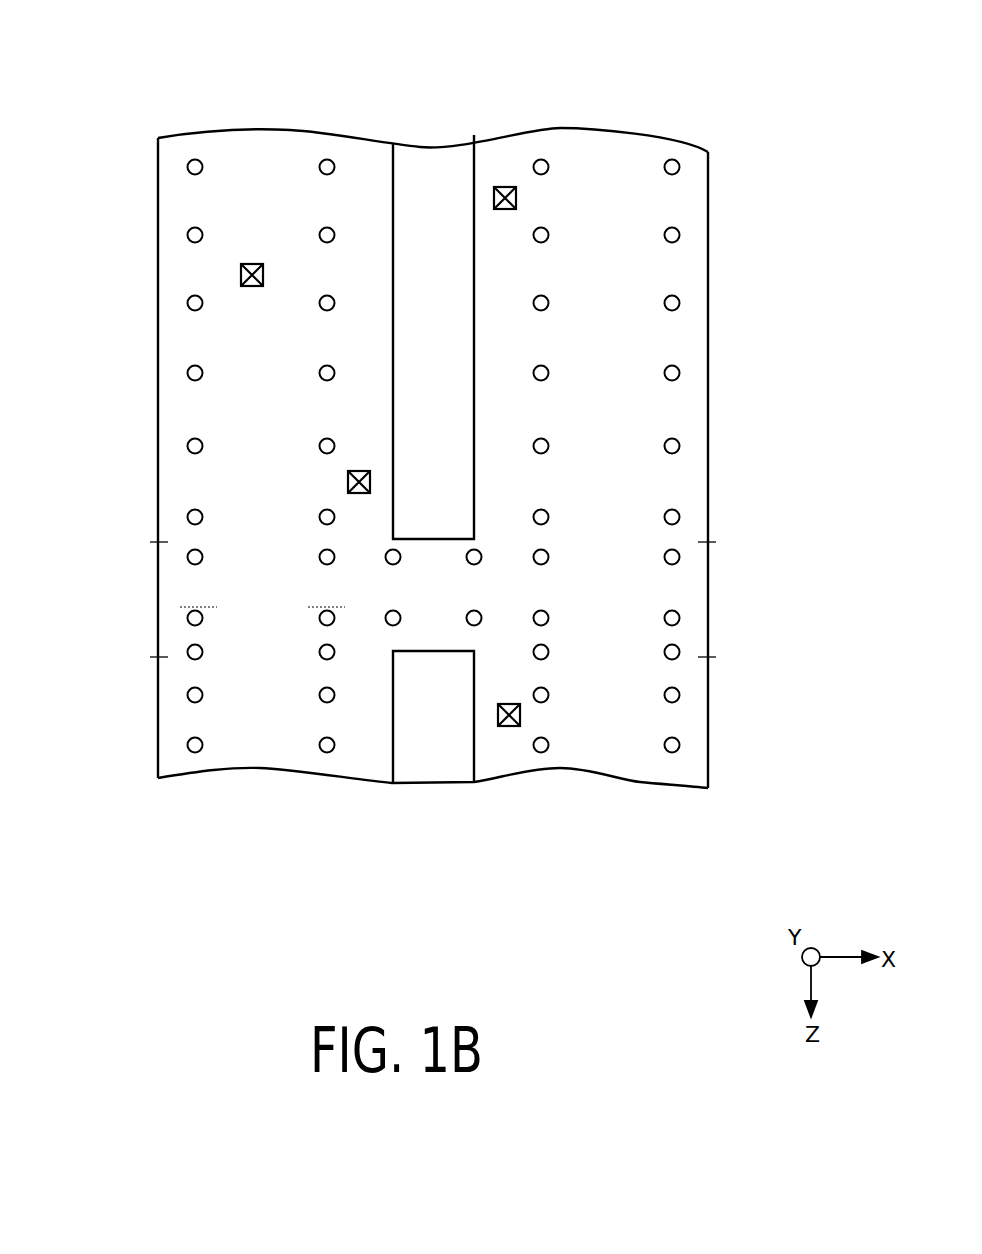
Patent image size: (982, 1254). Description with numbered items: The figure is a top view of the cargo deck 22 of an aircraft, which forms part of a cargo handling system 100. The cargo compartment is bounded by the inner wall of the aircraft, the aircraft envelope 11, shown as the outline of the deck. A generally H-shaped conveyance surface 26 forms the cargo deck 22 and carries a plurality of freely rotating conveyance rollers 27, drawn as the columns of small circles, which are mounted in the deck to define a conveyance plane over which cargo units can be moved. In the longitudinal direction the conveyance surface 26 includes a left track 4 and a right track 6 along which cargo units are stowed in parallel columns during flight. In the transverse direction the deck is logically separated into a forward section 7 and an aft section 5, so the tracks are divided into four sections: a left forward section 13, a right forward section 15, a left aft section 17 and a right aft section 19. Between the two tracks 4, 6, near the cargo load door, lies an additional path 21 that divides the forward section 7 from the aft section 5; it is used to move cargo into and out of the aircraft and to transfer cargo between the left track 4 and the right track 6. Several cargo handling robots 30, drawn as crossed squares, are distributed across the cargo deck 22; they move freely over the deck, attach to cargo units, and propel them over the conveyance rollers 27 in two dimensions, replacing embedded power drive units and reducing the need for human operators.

The cargo deck 22 is at (95, 78).
The left track 4 is at (165, 232).
The right track 6 is at (697, 218).
The forward section 7 is at (116, 277).
The aircraft envelope 11 is at (160, 357).
The left forward section 13 is at (287, 160).
The right forward section 15 is at (636, 178).
The left aft section 17 is at (357, 748).
The right aft section 19 is at (645, 748).
The additional path 21 is at (153, 596).
The conveyance surface 26 is at (448, 158).
The conveyance rollers 27 is at (336, 373).
The cargo handling robots 30 is at (508, 182).
The cargo handling system 100 is at (178, 417).
The aft section 5 is at (128, 726).